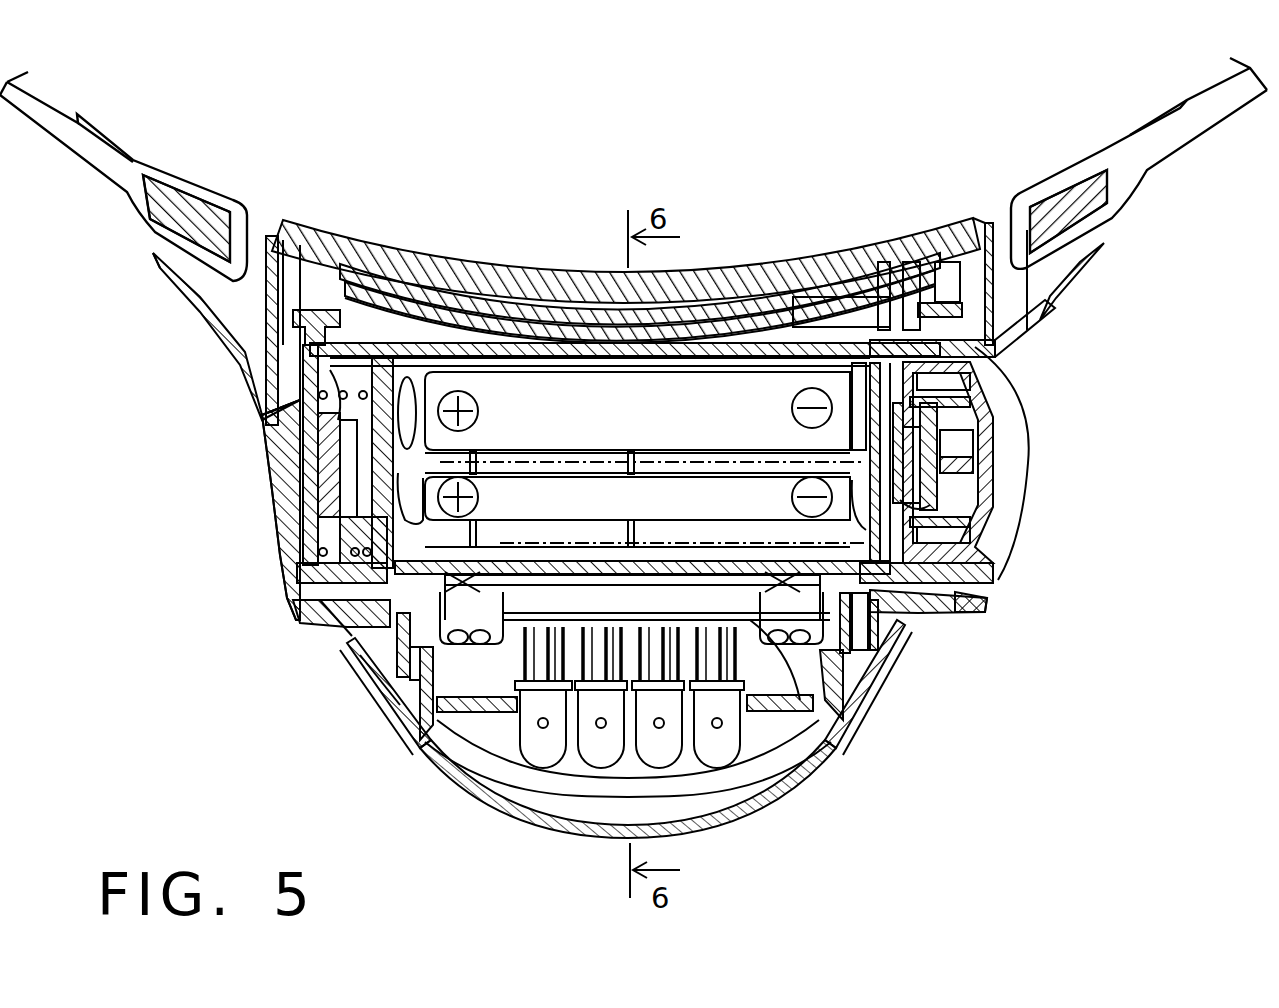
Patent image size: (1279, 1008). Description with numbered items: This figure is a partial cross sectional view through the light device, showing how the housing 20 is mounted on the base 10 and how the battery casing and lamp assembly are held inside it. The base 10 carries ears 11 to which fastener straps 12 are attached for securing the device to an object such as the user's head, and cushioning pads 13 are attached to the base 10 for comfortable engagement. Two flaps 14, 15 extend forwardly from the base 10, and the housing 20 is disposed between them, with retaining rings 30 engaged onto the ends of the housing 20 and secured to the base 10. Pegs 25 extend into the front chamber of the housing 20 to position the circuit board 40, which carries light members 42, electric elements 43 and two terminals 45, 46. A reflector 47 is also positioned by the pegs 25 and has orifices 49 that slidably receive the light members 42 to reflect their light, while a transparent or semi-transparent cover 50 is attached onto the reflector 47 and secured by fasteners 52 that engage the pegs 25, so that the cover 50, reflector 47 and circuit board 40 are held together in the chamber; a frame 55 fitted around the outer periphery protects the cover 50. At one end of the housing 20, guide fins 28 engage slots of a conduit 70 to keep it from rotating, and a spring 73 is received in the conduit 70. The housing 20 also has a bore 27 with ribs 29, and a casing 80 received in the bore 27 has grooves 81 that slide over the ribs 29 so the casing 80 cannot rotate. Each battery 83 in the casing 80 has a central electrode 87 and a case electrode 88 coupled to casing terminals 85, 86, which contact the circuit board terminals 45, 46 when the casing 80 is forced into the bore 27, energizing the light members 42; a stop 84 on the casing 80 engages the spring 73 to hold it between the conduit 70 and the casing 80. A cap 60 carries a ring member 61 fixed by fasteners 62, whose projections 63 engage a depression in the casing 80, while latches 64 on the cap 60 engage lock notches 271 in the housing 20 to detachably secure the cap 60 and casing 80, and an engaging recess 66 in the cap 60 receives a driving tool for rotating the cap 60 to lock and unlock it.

The base 10 is at (752, 270).
The ears 11 is at (210, 270).
The fastener straps 12 is at (97, 160).
The cushioning pads 13 is at (613, 280).
The flap 14 is at (287, 530).
The flap 15 is at (960, 598).
The housing 20 is at (922, 637).
The pegs 25 is at (360, 643).
The bore 27 is at (712, 350).
The lock notches 271 is at (933, 343).
The guide fins 28 is at (400, 355).
The ribs 29 is at (483, 370).
The retaining rings 30 is at (300, 613).
The circuit board 40 is at (745, 620).
The light members 42 is at (543, 760).
The electric elements 43 is at (423, 740).
The terminal 45 is at (473, 633).
The terminal 46 is at (840, 743).
The reflector 47 is at (827, 737).
The orifices 49 is at (752, 705).
The cover 50 is at (603, 840).
The fasteners 52 is at (423, 670).
The frame 55 is at (373, 677).
The cap 60 is at (993, 567).
The ring member 61 is at (993, 357).
The fasteners 62 is at (973, 550).
The projections 63 is at (977, 395).
The latches 64 is at (947, 317).
The engaging recess 66 is at (998, 455).
The conduit 70 is at (293, 460).
The spring 73 is at (307, 397).
The casing 80 is at (880, 367).
The grooves 81 is at (420, 370).
The battery 83 is at (547, 397).
The stop 84 is at (340, 387).
The terminal 85 is at (485, 570).
The terminal 86 is at (773, 567).
The central electrode 87 is at (423, 407).
The case electrode 88 is at (840, 395).